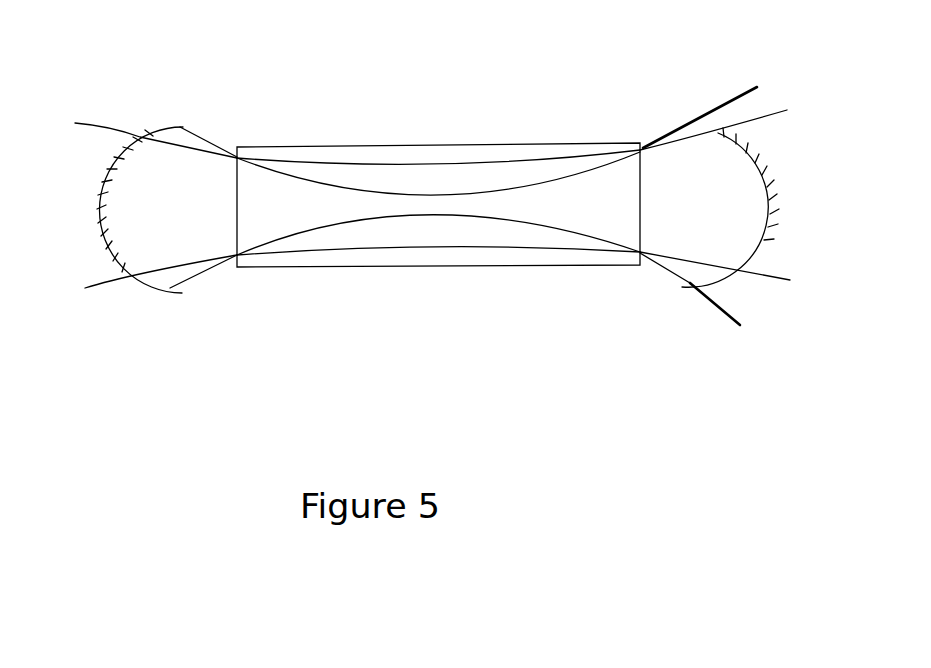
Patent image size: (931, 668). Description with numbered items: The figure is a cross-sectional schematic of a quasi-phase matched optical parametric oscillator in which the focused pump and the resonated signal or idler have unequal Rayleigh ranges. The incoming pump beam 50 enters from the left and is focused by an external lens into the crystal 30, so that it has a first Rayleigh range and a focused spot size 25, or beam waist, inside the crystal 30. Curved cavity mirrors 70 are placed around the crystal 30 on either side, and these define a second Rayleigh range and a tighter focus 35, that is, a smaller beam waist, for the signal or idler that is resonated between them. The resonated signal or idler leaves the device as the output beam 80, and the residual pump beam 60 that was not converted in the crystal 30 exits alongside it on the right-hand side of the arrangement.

The focused spot size 25 is at (407, 177).
The crystal 30 is at (452, 258).
The tighter focus 35 is at (407, 210).
The incoming pump beam 50 is at (93, 143).
The residual pump beam 60 is at (783, 266).
The curved cavity mirrors 70 is at (113, 252).
The output beam 80 is at (722, 312).